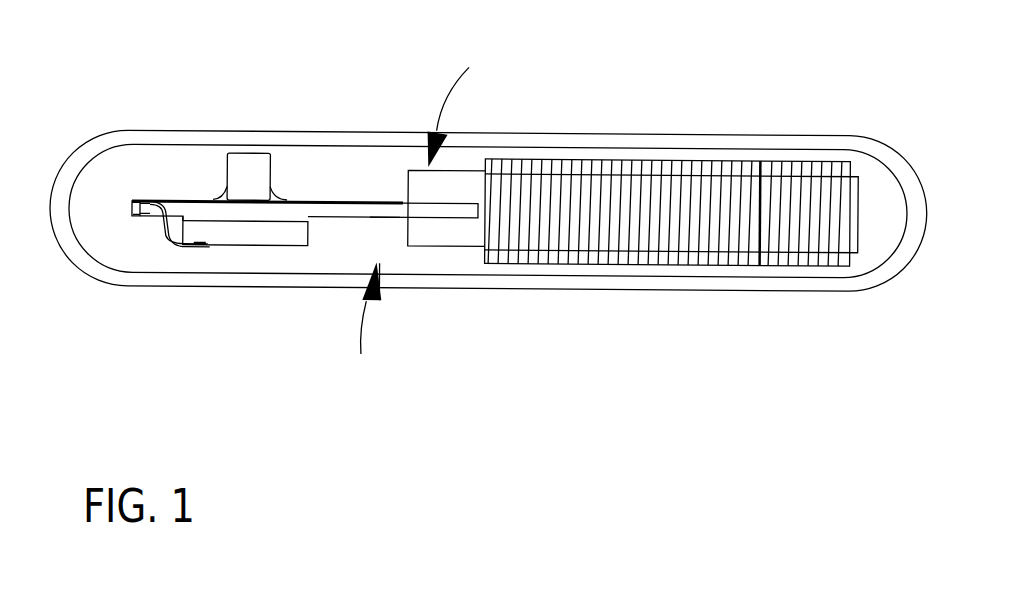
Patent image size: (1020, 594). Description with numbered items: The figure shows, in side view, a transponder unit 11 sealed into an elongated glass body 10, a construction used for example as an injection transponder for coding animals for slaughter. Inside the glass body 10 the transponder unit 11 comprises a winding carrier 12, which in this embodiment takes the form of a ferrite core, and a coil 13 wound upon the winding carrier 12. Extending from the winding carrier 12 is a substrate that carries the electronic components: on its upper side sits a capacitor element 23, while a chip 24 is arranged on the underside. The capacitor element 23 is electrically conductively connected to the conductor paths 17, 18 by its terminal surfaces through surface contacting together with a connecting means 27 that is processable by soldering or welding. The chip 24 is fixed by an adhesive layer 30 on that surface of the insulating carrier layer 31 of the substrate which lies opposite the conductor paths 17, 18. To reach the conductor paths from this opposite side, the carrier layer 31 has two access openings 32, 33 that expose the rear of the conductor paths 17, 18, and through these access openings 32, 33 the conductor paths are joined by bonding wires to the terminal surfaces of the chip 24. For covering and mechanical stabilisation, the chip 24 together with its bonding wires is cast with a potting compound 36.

The glass body 10 is at (557, 138).
The transponder unit 11 is at (420, 217).
The winding carrier 12 is at (473, 232).
The coil 13 is at (742, 136).
The conductor path 17 is at (317, 173).
The conductor path 18 is at (317, 173).
The capacitor element 23 is at (255, 170).
The chip 24 is at (273, 238).
The connecting means 27 is at (217, 197).
The adhesive layer 30 is at (312, 220).
The insulating carrier layer 31 is at (380, 219).
The access opening 32 is at (153, 211).
The access opening 33 is at (153, 211).
The potting compound 36 is at (293, 248).